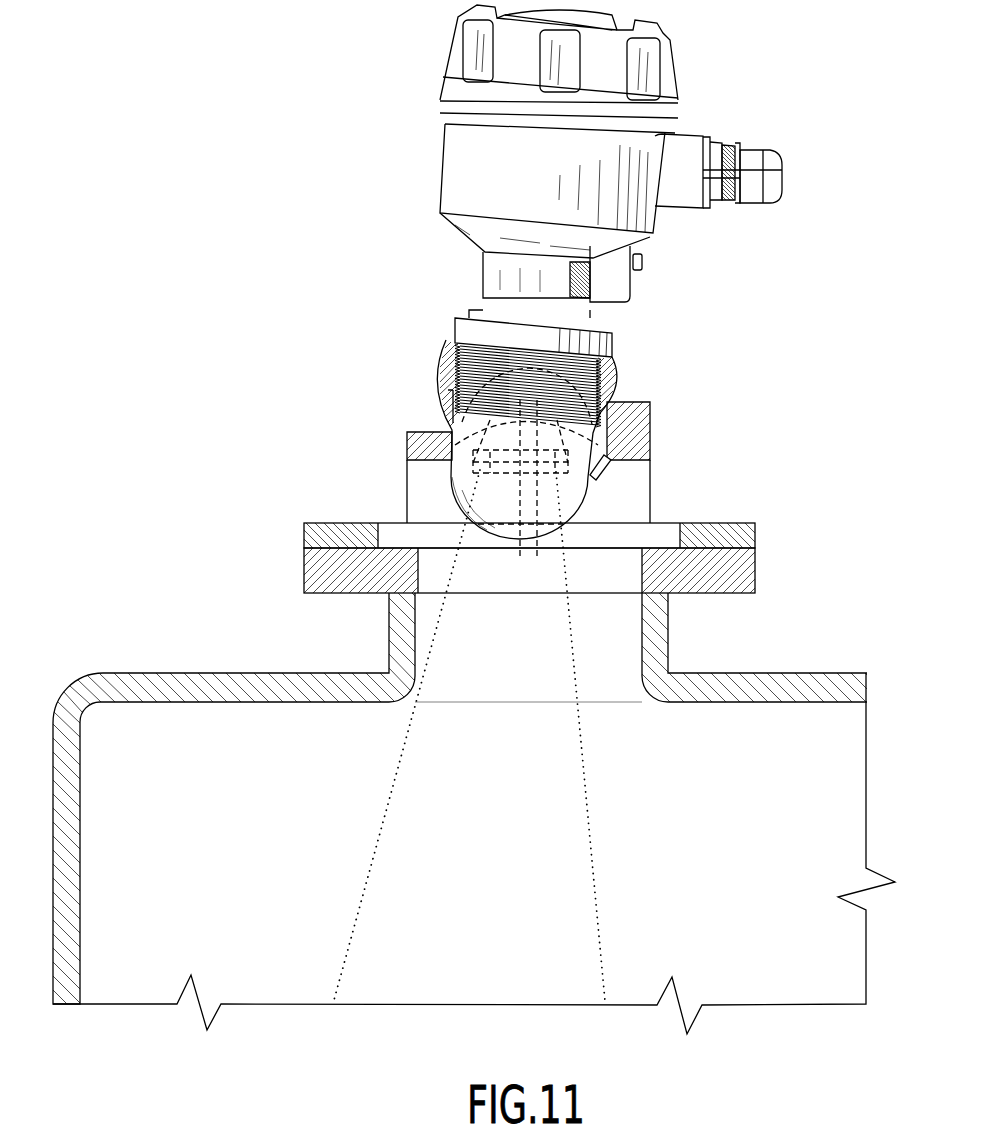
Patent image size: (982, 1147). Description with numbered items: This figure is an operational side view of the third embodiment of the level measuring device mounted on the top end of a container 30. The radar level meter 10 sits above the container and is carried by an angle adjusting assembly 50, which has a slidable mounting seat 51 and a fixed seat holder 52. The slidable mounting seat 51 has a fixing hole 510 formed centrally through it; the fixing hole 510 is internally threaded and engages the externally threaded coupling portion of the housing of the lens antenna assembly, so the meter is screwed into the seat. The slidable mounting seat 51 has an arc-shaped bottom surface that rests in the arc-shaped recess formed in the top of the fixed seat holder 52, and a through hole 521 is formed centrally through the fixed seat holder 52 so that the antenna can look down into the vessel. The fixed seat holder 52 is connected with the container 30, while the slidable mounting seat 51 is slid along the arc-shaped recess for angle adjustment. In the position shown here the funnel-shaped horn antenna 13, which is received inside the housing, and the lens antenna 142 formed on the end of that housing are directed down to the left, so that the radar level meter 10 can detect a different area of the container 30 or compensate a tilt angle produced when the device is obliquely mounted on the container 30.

The radar level meter 10 is at (406, 128).
The angle adjusting assembly 50 is at (552, 426).
The fixing hole 510 is at (458, 352).
The slidable mounting seat 51 is at (445, 378).
The horn antenna 13 is at (470, 428).
The lens antenna 142 is at (452, 498).
The fixed seat holder 52 is at (563, 462).
The through hole 521 is at (603, 470).
The container 30 is at (198, 685).